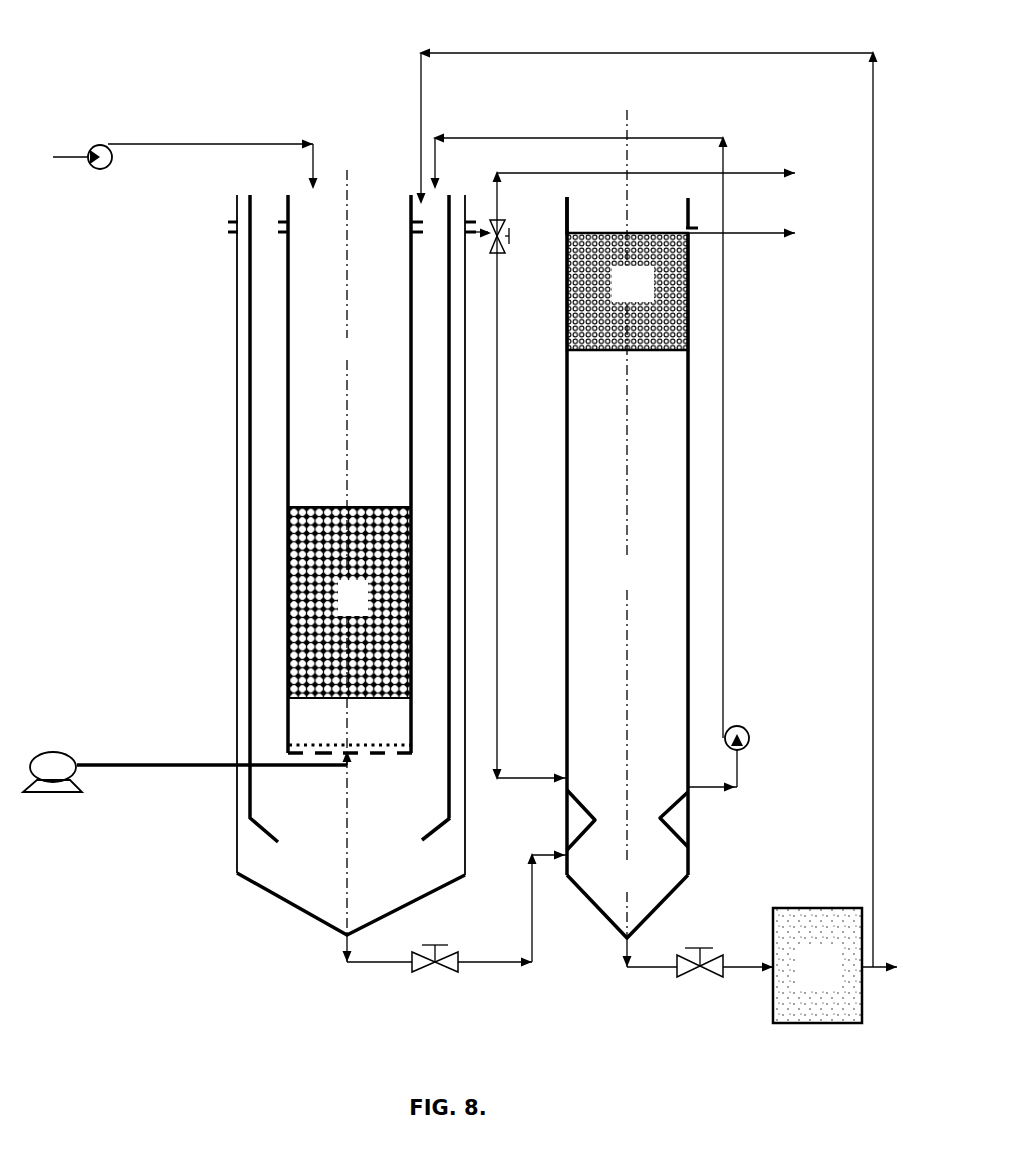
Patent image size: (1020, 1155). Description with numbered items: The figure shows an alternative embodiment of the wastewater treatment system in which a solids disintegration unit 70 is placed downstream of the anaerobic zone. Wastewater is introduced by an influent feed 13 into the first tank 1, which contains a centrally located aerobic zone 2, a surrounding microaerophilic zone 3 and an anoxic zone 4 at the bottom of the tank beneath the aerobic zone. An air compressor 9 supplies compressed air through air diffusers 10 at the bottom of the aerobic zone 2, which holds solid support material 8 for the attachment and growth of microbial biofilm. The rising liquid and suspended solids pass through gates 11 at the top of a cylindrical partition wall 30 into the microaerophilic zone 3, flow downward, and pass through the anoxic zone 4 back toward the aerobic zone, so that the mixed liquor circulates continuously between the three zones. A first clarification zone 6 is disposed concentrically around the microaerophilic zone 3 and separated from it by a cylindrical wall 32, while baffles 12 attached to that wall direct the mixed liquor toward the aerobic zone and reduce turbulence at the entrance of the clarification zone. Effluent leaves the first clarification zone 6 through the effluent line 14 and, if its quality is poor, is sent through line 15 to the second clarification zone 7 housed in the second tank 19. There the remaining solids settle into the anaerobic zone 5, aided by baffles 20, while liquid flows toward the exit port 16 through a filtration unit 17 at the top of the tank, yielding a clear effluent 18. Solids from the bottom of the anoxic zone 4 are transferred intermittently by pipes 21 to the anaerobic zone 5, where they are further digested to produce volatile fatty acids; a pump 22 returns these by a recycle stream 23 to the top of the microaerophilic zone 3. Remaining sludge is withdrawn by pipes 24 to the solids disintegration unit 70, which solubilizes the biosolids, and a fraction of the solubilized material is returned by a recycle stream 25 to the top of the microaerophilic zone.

The first tank 1 is at (237, 210).
The aerobic zone 2 is at (345, 474).
The microaerophilic zone 3 is at (417, 517).
The anoxic zone 4 is at (347, 859).
The anaerobic zone 5 is at (636, 888).
The first clarification zone 6 is at (450, 423).
The second clarification zone 7 is at (636, 584).
The solid support material 8 is at (362, 611).
The air compressor 9 is at (33, 794).
The air diffusers 10 is at (375, 757).
The gates 11 is at (410, 233).
The baffles 12 is at (431, 826).
The feed pump and feed line 13 is at (90, 151).
The effluent line 14 is at (478, 236).
The line 15 is at (497, 498).
The exit port 16 is at (700, 226).
The filtration unit 17 is at (627, 291).
The effluent 18 is at (760, 233).
The second tank 19 is at (567, 230).
The baffles 20 is at (670, 808).
The pipes 21 is at (455, 929).
The pump 22 is at (749, 742).
The recycle stream 23 is at (538, 138).
The pipes 24 is at (660, 968).
The recycle stream 25 is at (516, 53).
The cylindrical partition wall 30 is at (410, 333).
The cylindrical wall 32 is at (449, 500).
The solids disintegration unit 70 is at (805, 979).